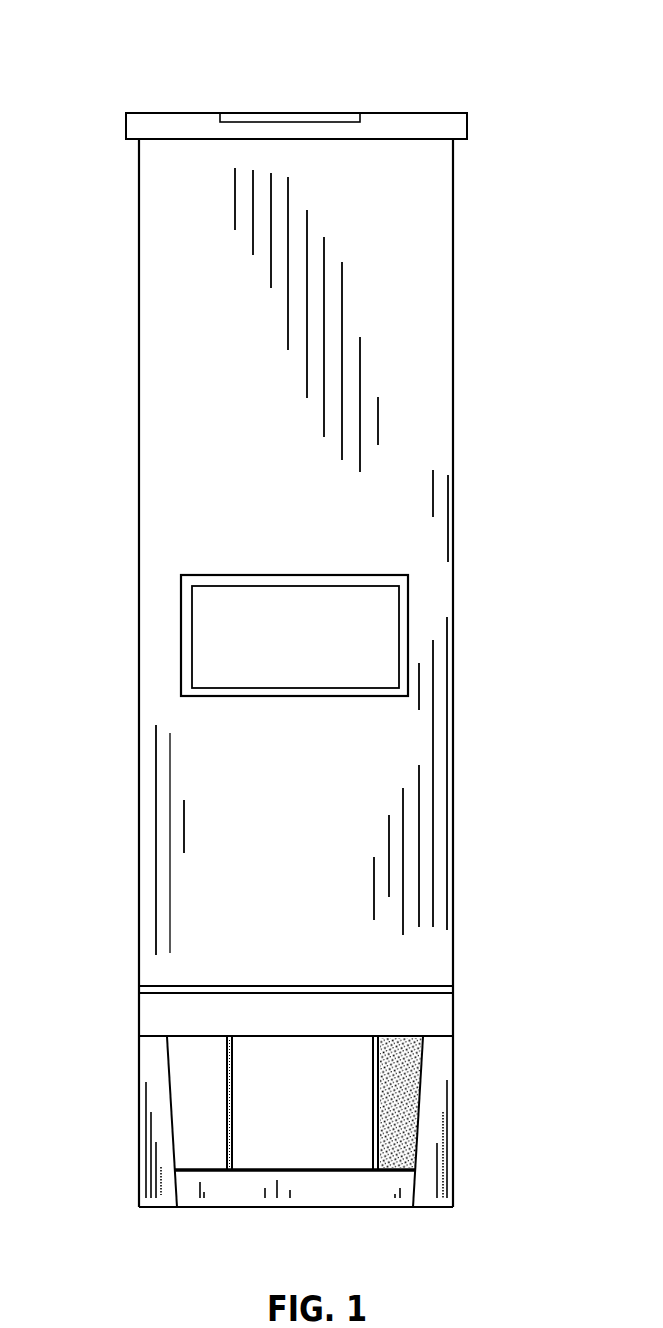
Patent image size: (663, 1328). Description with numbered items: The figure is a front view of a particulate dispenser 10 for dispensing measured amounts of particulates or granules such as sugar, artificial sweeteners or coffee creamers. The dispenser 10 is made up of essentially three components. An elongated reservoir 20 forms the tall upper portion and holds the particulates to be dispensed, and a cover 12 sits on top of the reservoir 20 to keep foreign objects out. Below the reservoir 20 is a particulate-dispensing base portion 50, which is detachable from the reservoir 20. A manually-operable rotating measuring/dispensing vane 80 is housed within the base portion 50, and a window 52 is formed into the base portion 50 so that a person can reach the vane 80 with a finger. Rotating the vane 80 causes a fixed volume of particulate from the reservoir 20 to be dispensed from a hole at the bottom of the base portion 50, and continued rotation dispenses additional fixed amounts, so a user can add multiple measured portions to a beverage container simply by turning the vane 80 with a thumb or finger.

The particulate dispenser 10 is at (552, 36).
The cover 12 is at (142, 113).
The elongated reservoir 20 is at (138, 361).
The particulate-dispensing base portion 50 is at (138, 1066).
The window 52 is at (303, 1133).
The measuring/dispensing vane 80 is at (267, 1132).